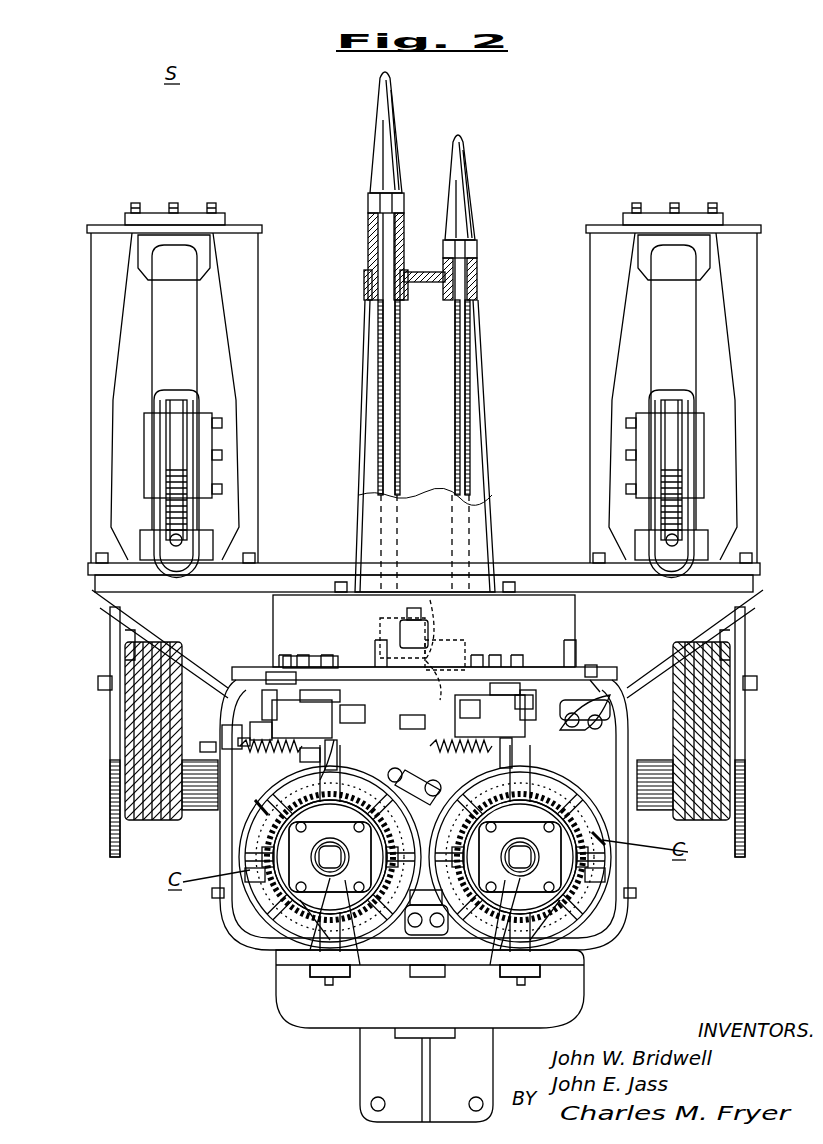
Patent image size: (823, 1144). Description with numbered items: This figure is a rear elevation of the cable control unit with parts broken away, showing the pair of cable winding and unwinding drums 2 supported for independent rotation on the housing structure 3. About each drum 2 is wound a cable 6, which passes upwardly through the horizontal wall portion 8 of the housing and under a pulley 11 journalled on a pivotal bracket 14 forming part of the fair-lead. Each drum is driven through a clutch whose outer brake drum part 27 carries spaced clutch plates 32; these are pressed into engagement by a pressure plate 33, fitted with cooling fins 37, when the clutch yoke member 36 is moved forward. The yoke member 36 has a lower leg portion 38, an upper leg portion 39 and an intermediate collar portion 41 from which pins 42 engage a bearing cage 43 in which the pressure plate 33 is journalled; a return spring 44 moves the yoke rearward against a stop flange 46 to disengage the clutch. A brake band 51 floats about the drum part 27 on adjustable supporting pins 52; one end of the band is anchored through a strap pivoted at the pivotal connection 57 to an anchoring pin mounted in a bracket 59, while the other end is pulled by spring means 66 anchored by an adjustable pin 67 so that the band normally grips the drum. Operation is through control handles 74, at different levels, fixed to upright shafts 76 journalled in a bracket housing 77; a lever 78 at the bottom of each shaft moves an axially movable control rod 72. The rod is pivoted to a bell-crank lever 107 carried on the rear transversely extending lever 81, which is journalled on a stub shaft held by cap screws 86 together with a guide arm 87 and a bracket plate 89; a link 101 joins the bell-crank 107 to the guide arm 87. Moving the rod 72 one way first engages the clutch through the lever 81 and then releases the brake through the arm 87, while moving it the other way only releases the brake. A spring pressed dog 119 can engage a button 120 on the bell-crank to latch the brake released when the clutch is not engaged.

The cable winding and unwinding drum 2 is at (112, 652).
The housing structure 3 is at (557, 578).
The cable 6 is at (180, 563).
The horizontal wall portion 8 is at (100, 570).
The pulley 11 is at (176, 512).
The bracket 14 is at (168, 352).
The outer brake drum part 27 is at (278, 820).
The clutch plates 32 is at (285, 838).
The pressure plate 33 is at (320, 912).
The clutch yoke member 36 is at (332, 935).
The cooling fins 37 is at (247, 878).
The lower leg portion 38 is at (308, 970).
The upper leg portion 39 is at (300, 756).
The intermediate collar portion 41 is at (312, 888).
The pins 42 is at (325, 848).
The bearing cage 43 is at (262, 808).
The return spring 44 is at (325, 770).
The stop flange 46 is at (325, 895).
The brake band 51 is at (345, 955).
The adjustable supporting pins 52 is at (214, 893).
The pivotal connection 57 is at (332, 780).
The bracket 59 is at (410, 792).
The spring means 66 is at (238, 725).
The adjustable pin 67 is at (210, 742).
The control rod 72 is at (345, 700).
The control handle 74 is at (380, 127).
The upright shaft 76 is at (386, 390).
The bracket housing 77 is at (371, 512).
The lever 78 is at (428, 690).
The rear transversely extending lever 81 is at (300, 705).
The cap screws 86 is at (290, 655).
The guide arm 87 is at (295, 710).
The bracket plate 89 is at (288, 752).
The link 101 is at (335, 660).
The bell-crank lever 107 is at (385, 700).
The spring pressed dog 119 is at (590, 700).
The button 120 is at (596, 680).